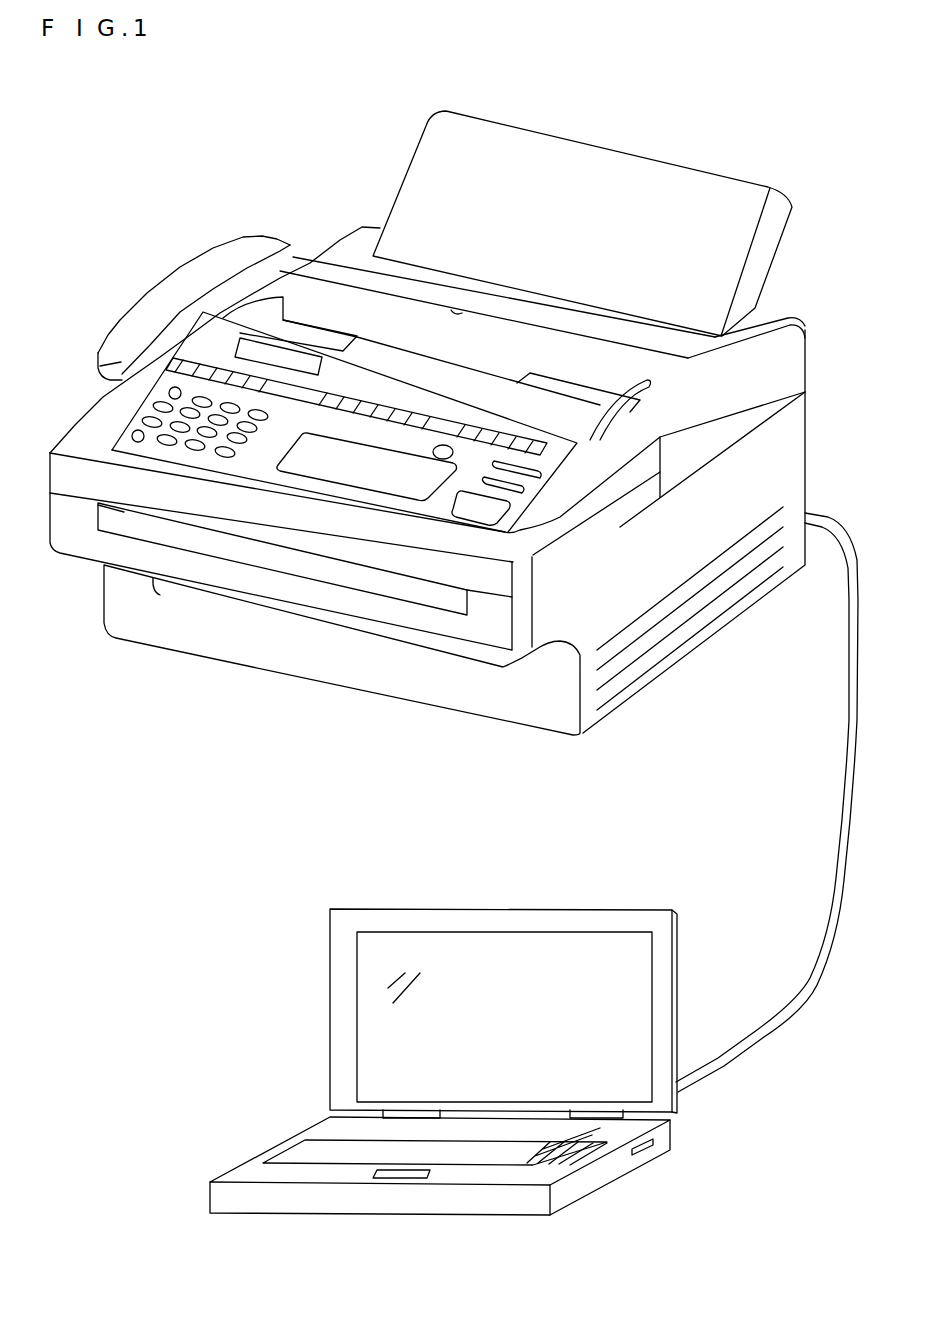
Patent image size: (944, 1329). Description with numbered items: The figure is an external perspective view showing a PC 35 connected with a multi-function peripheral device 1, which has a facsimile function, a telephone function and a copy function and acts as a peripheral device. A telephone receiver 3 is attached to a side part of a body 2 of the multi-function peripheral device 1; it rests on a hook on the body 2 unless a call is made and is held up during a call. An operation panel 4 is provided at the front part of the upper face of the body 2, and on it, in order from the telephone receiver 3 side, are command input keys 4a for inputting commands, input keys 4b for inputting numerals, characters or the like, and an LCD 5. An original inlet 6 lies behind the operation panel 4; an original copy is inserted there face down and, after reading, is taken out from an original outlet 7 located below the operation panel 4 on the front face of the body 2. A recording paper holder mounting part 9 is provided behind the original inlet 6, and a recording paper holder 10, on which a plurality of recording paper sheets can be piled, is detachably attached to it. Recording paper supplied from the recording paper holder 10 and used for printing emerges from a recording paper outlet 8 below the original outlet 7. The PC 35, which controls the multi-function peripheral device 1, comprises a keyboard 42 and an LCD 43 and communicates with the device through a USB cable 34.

The multi-function peripheral device 1 is at (764, 112).
The body 2 is at (794, 378).
The telephone receiver 3 is at (219, 258).
The operation panel 4 is at (240, 470).
The command input keys 4a is at (142, 444).
The input keys 4b is at (242, 467).
The LCD 5 is at (362, 448).
The original inlet 6 is at (437, 347).
The original outlet 7 is at (143, 530).
The recording paper outlet 8 is at (330, 616).
The recording paper holder mounting part 9 is at (360, 242).
The recording paper holder 10 is at (585, 156).
The USB cable 34 is at (754, 1038).
The PC 35 is at (258, 918).
The keyboard 42 is at (305, 1153).
The LCD 43 is at (378, 1043).